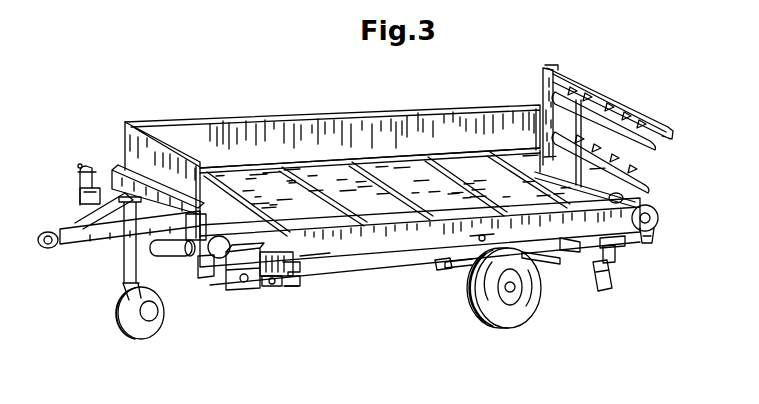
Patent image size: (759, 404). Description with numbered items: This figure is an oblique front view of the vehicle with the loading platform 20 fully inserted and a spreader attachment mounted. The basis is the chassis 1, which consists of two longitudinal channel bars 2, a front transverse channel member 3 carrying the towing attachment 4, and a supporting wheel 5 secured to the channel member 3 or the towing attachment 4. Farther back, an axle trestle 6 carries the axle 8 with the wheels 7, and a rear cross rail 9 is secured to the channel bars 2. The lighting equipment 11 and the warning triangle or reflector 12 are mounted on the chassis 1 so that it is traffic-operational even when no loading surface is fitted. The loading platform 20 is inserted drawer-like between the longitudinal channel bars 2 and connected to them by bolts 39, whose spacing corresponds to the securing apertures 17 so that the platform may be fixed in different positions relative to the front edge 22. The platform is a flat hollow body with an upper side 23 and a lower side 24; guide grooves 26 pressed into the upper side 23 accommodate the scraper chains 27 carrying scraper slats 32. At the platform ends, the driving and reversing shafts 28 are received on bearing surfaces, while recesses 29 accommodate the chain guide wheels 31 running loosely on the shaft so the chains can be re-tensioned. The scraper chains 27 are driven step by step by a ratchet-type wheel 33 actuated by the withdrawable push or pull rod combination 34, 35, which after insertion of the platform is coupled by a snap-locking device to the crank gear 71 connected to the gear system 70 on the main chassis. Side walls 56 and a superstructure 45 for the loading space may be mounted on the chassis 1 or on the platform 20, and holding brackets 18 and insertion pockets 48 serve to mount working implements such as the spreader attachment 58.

The chassis 1 is at (112, 157).
The longitudinal channel bars 2 is at (323, 160).
The front transverse channel member 3 is at (78, 168).
The towing attachment 4 is at (115, 237).
The supporting wheel 5 is at (128, 258).
The axle trestle 6 is at (452, 266).
The wheels 7 is at (492, 318).
The axle 8 is at (465, 312).
The rear cross rail 9 is at (620, 247).
The lighting equipment 11 is at (606, 250).
The warning triangle or reflector 12 is at (604, 284).
The securing apertures 17 is at (483, 236).
The holding brackets 18 is at (545, 88).
The loading platform 20 is at (456, 208).
The front edge 22 is at (228, 272).
The upper side 23 is at (482, 175).
The lower side 24 is at (406, 266).
The guide grooves 26 is at (292, 208).
The scraper chains 27 is at (402, 172).
The driving and reversing shafts 28 is at (655, 232).
The recesses 29 is at (127, 297).
The chain guide wheels 31 is at (204, 278).
The scraper slats 32 is at (286, 176).
The ratchet-type wheel 33 is at (659, 218).
The push or pull rod 34 is at (325, 274).
The push or pull rod 35 is at (440, 266).
The bolts 39 is at (292, 282).
The superstructure 45 is at (80, 197).
The insertion pockets 48 is at (270, 288).
The side walls 56 is at (212, 130).
The working implement 58 is at (598, 120).
The gear system 70 is at (160, 256).
The crank gear 71 is at (252, 290).